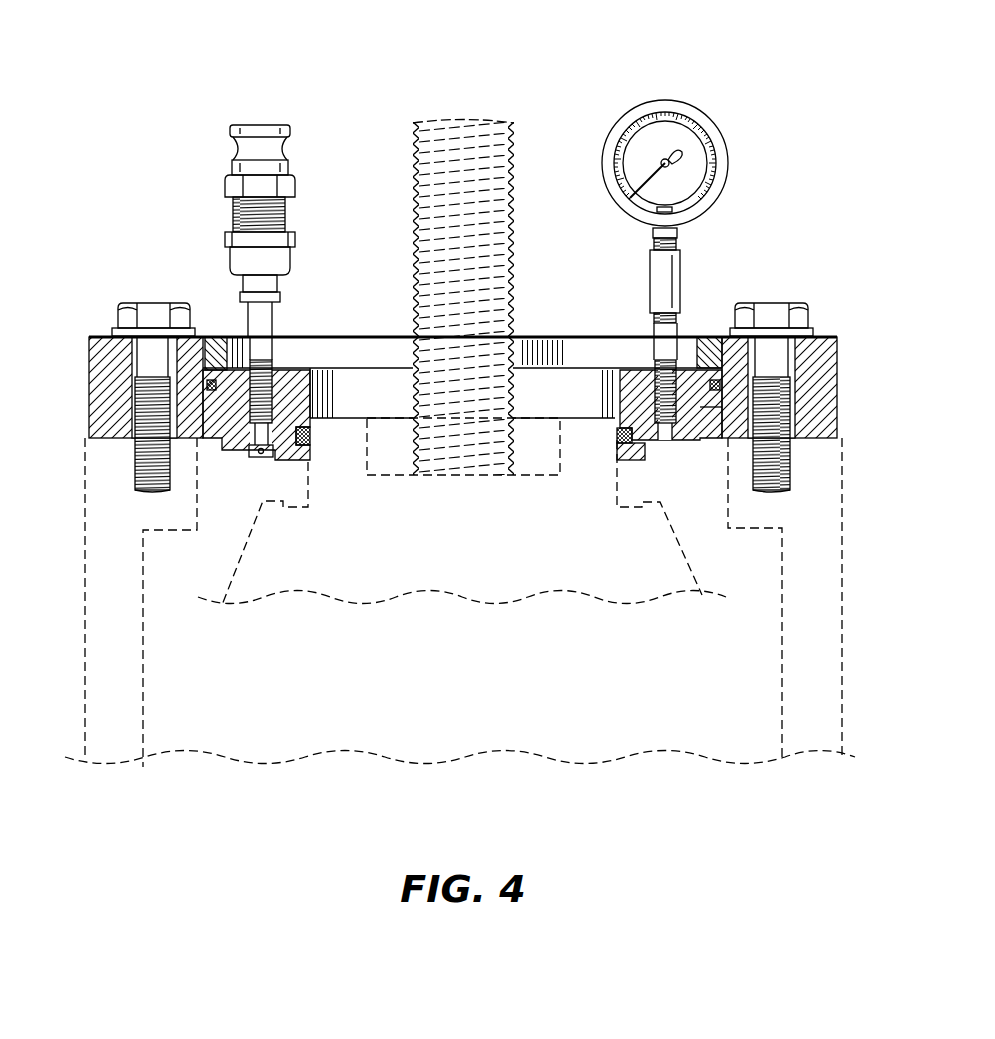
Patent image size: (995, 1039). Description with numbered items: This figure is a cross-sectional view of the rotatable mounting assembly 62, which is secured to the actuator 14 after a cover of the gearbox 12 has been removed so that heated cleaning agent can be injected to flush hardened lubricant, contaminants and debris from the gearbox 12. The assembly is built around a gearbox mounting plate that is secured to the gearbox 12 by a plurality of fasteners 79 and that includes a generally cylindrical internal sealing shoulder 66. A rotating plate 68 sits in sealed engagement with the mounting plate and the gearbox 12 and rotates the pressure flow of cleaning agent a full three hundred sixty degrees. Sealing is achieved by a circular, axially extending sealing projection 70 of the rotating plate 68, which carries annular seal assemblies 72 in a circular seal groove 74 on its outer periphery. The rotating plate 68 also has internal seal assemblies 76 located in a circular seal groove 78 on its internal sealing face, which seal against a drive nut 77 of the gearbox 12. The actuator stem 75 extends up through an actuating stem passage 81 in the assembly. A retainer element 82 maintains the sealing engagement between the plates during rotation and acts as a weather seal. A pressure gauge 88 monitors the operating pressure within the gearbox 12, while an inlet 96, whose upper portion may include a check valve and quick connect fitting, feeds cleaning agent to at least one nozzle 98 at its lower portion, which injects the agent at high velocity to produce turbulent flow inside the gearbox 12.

The gearbox 12 is at (442, 664).
The actuator 14 is at (112, 740).
The rotatable mounting assembly 62 is at (106, 247).
The internal sealing shoulder 66 is at (818, 383).
The rotating plate 68 is at (590, 353).
The sealing projection 70 is at (220, 335).
The seal assemblies 72 is at (205, 388).
The seal groove 74 is at (212, 378).
The actuator stem 75 is at (470, 140).
The internal seal assemblies 76 is at (618, 444).
The drive nut 77 is at (333, 455).
The seal groove 78 is at (305, 433).
The fasteners 79 is at (153, 312).
The actuating stem passage 81 is at (362, 390).
The retainer element 82 is at (710, 337).
The pressure gauge 88 is at (708, 127).
The inlet 96 is at (257, 123).
The nozzle 98 is at (262, 462).